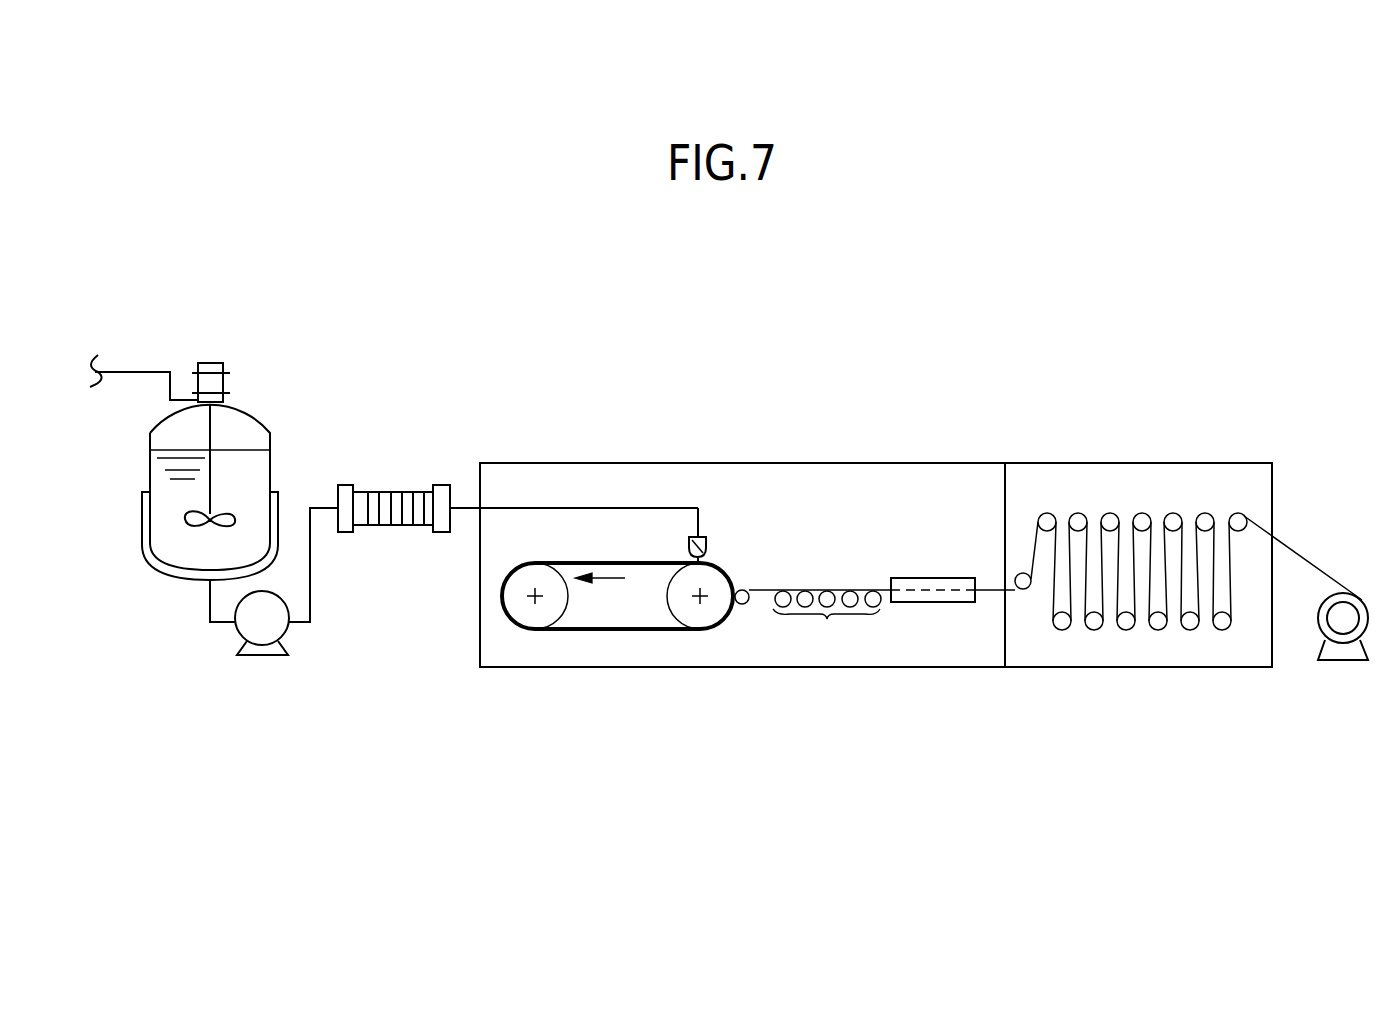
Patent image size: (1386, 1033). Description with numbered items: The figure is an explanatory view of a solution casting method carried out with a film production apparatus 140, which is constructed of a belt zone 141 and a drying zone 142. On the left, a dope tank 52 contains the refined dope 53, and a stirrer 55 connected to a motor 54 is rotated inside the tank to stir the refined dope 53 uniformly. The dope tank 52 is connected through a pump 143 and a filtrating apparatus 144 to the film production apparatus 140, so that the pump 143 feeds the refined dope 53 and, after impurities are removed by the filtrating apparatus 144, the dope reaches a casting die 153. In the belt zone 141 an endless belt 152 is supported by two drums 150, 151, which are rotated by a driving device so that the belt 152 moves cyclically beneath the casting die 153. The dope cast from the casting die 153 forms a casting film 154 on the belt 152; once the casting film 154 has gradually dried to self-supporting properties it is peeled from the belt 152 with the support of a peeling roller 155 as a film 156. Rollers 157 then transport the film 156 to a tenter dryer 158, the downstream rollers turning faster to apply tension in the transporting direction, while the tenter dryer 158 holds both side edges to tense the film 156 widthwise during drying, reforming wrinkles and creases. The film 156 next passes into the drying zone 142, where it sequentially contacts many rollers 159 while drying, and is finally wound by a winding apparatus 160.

The film production apparatus 140 is at (772, 338).
The belt zone 141 is at (606, 463).
The drying zone 142 is at (1045, 463).
The dope tank 52 is at (150, 478).
The refined dope 53 is at (178, 540).
The motor 54 is at (210, 380).
The stirrer 55 is at (232, 515).
The pump 143 is at (262, 657).
The filtrating apparatus 144 is at (393, 530).
The drum 150 is at (543, 610).
The drum 151 is at (707, 612).
The belt 152 is at (720, 568).
The casting die 153 is at (704, 540).
The casting film 154 is at (618, 630).
The peeling roller 155 is at (745, 605).
The film 156 is at (760, 590).
The rollers 157 is at (827, 623).
The tenter dryer 158 is at (933, 602).
The rollers 159 is at (1142, 522).
The winding apparatus 160 is at (1346, 660).